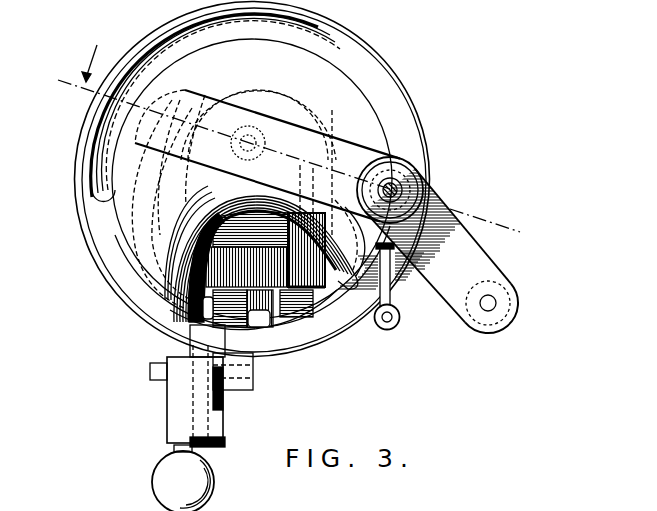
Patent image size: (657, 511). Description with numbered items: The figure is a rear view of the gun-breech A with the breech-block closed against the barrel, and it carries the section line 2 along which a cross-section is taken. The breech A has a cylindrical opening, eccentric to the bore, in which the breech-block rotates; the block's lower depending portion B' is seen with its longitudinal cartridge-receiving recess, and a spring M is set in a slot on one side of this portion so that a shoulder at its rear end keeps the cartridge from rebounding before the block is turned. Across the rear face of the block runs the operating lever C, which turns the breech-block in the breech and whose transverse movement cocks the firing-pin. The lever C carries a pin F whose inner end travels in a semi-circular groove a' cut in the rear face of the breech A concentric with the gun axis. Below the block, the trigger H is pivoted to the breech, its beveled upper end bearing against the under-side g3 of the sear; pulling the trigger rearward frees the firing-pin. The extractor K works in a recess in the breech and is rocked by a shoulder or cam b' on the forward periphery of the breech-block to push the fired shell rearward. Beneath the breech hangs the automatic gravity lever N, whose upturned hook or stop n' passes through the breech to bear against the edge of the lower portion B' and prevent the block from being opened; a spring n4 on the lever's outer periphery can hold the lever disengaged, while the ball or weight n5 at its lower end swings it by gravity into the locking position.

The section line 2— 2 is at (290, 149).
The gun-breech A is at (303, 363).
The semi-circular groove a' is at (252, 179).
The shoulder or cam b' is at (234, 196).
The lower depending portion of the breech-block B' is at (267, 183).
The operating lever C is at (374, 229).
The pin F is at (390, 190).
The under-side of the sear g3 is at (397, 276).
The trigger H is at (400, 318).
The extractor K is at (285, 273).
The spring M is at (177, 293).
The hook or stop n' is at (184, 382).
The automatic gravity lever N is at (177, 420).
The spring n4 is at (216, 445).
The ball or weight n5 is at (204, 478).